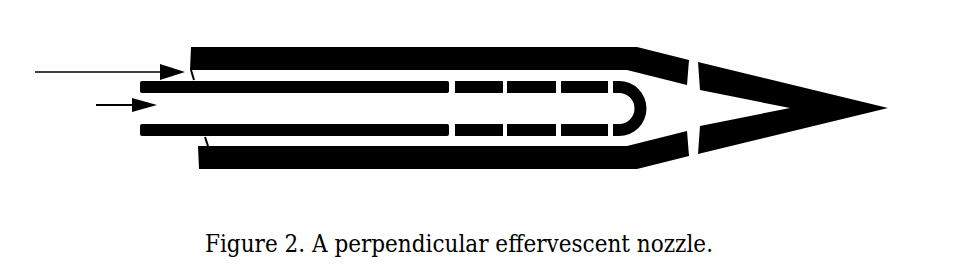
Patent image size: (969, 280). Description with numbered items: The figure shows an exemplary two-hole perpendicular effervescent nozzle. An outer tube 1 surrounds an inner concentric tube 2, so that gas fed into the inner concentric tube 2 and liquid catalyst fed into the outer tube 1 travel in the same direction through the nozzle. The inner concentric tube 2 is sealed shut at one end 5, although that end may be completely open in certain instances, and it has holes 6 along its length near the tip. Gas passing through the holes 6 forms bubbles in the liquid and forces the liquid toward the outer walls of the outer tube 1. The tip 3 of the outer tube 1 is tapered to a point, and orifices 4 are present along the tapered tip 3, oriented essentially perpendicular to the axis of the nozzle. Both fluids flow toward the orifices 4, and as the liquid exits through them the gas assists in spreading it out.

The outer tube 1 is at (362, 92).
The inner concentric tube 2 is at (272, 108).
The tip 3 is at (800, 108).
The orifices 4 is at (693, 107).
The sealed end 5 is at (641, 108).
The holes 6 is at (531, 108).